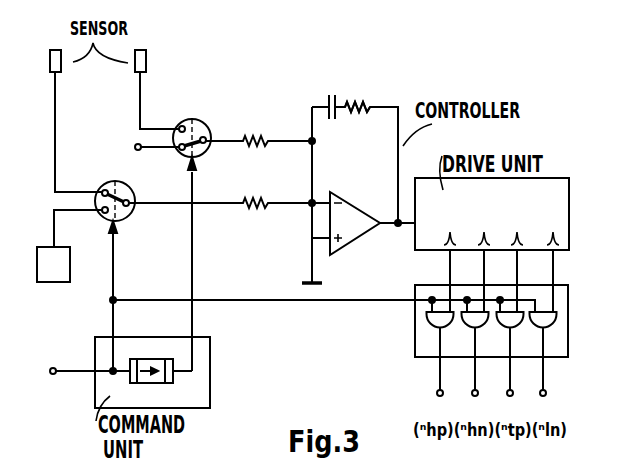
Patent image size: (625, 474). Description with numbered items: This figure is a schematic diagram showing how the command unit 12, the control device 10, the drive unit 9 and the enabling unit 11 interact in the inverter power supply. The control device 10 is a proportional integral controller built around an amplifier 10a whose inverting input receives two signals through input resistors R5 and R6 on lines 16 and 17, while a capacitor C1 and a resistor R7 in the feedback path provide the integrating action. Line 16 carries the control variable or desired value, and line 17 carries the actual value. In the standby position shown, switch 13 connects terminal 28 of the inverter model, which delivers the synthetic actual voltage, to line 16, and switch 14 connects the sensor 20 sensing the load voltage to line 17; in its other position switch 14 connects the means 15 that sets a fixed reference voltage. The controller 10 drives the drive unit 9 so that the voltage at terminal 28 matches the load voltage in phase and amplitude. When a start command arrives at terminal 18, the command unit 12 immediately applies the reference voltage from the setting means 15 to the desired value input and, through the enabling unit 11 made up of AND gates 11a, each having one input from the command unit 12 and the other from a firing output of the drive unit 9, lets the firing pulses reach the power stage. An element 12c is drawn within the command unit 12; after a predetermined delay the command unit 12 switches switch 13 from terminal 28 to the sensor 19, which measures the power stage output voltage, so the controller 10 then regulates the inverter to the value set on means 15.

The drive unit 9 is at (506, 216).
The control device 10 is at (373, 191).
The amplifier 10a is at (376, 228).
The enabling unit 11 is at (354, 340).
The AND gate 11a is at (431, 322).
The command unit 12 is at (166, 354).
The command unit element 12c is at (142, 359).
The switch 13 is at (196, 119).
The switch 14 is at (132, 214).
The means for setting a fixed reference voltage 15 is at (69, 246).
The line 16 is at (288, 139).
The line 17 is at (291, 201).
The terminal 18 is at (76, 372).
The sensor 19 is at (145, 52).
The sensor 20 is at (52, 52).
The terminal 28 is at (144, 145).
The input resistor R5 is at (252, 135).
The input resistor R6 is at (256, 195).
The resistor R7 is at (356, 98).
The capacitor C1 is at (326, 100).